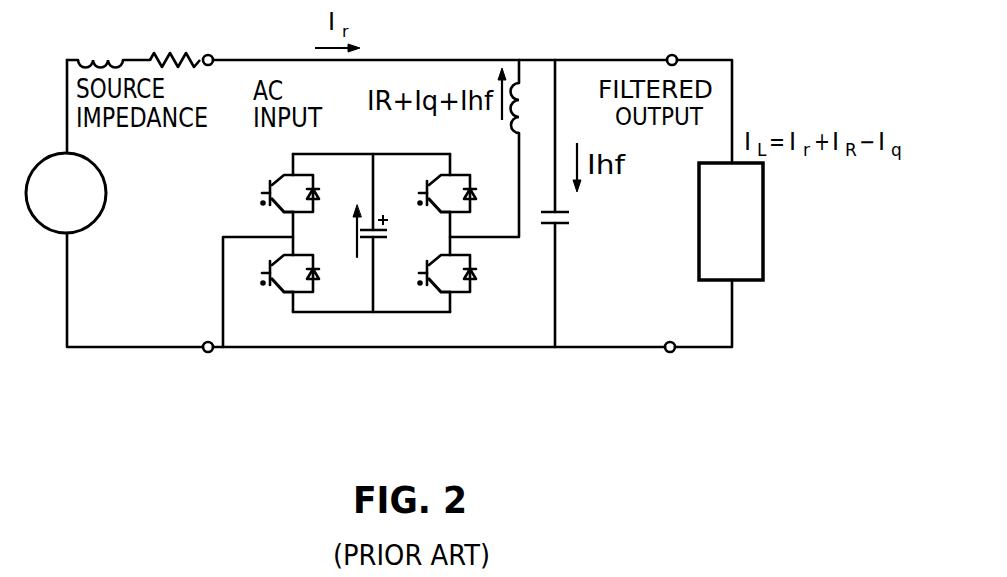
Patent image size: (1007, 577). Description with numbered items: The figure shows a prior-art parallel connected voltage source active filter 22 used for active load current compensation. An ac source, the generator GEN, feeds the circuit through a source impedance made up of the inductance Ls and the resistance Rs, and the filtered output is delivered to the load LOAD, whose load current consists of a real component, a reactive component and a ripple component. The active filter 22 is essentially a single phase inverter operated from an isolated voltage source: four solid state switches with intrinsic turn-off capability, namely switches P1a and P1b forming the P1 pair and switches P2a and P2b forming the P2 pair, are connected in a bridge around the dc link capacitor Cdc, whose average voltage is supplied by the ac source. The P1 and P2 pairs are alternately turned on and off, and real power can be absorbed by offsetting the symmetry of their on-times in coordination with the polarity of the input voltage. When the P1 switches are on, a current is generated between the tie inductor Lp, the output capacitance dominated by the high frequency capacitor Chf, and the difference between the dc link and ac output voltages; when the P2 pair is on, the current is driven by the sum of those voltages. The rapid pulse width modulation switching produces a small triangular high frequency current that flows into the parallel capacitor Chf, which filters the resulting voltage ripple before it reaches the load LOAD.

The parallel connected voltage source active filter 22 is at (373, 208).
The source impedance inductance Ls is at (100, 44).
The source impedance resistance Rs is at (175, 44).
The generator GEN is at (66, 193).
The tie inductor Lp is at (534, 108).
The high frequency capacitor Chf is at (577, 228).
The load LOAD is at (731, 221).
The link capacitor Cdc is at (395, 233).
The switch P1 P1a is at (270, 193).
The switch P2 P2b is at (281, 285).
The switch P2 P2a is at (460, 181).
The switch P1 P1b is at (472, 273).